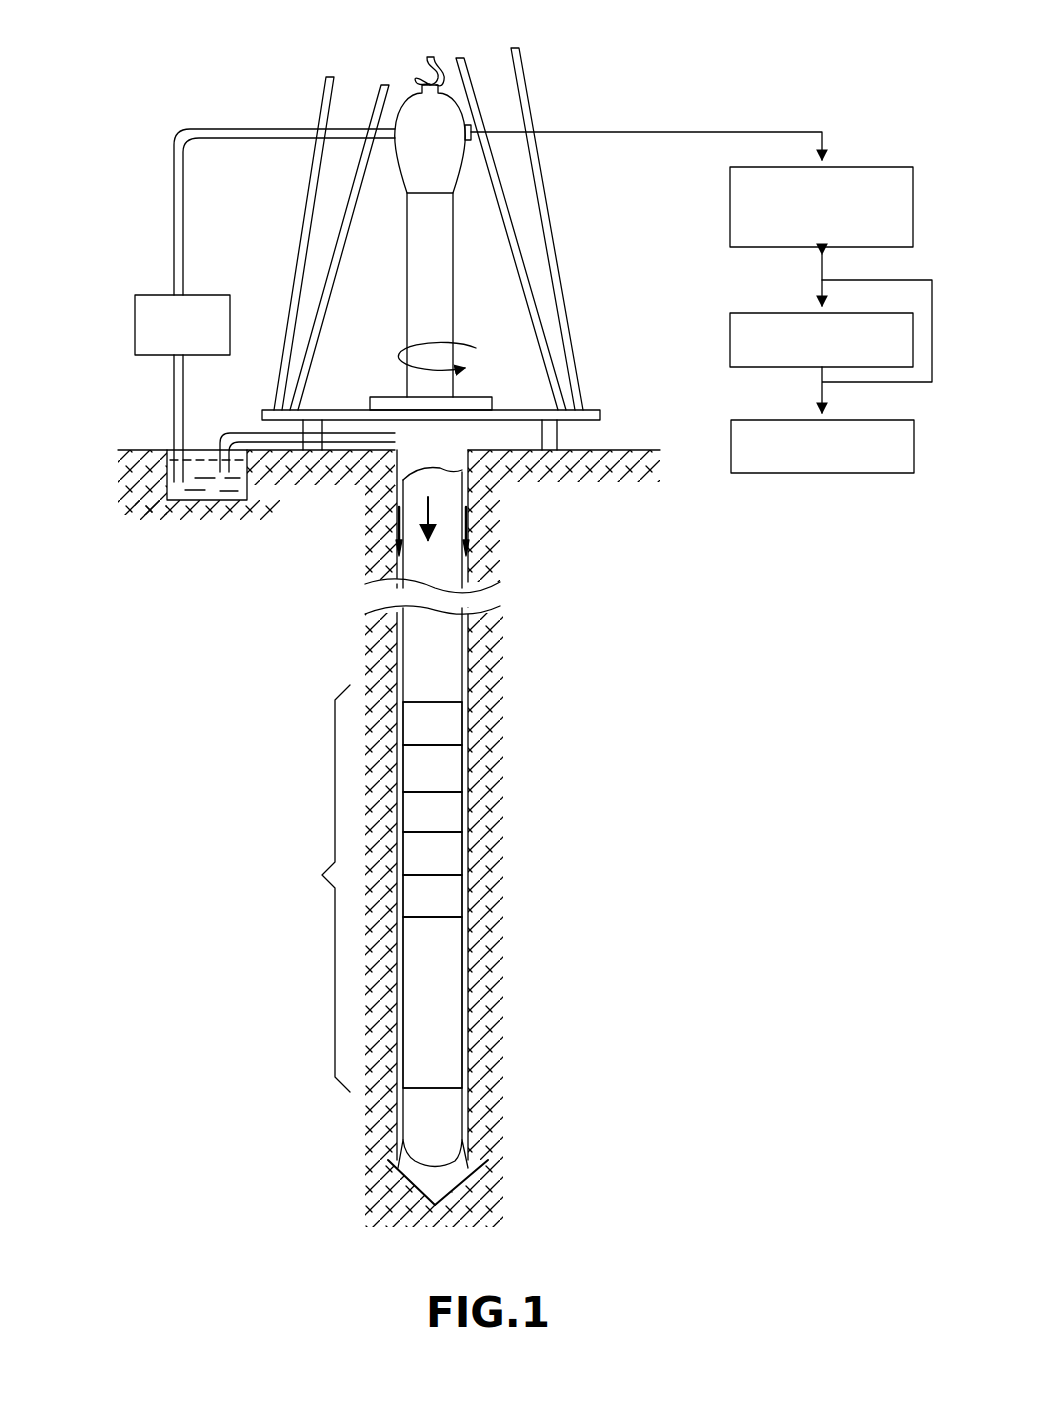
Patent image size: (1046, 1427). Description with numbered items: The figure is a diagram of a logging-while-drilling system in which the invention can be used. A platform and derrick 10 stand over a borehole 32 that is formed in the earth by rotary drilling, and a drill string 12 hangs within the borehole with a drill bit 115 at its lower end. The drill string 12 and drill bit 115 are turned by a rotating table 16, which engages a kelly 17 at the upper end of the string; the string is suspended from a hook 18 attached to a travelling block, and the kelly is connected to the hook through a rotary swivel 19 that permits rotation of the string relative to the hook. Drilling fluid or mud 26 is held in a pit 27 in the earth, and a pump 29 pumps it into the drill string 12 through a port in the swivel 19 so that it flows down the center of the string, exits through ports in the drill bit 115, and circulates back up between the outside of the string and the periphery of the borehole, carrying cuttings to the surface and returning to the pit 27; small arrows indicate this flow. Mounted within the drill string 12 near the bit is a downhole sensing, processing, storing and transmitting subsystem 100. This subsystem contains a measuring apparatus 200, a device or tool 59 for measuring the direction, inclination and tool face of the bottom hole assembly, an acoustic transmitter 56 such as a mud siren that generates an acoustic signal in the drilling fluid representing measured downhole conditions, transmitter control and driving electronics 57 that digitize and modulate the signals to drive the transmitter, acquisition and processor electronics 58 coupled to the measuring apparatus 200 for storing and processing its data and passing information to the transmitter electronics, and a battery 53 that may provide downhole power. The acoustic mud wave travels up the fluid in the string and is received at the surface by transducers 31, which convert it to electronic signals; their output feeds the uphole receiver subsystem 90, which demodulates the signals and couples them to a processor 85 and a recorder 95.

The platform and derrick 10 is at (650, 426).
The drill string 12 is at (400, 548).
The rotating table 16 is at (483, 396).
The kelly 17 is at (455, 315).
The hook 18 is at (422, 68).
The rotary swivel 19 is at (395, 175).
The drilling fluid or mud 26 is at (213, 492).
The pit 27 is at (167, 478).
The pump 29 is at (135, 330).
The transducers 31 is at (469, 146).
The borehole 32 is at (472, 650).
The battery 53 is at (455, 815).
The acoustic transmitter 56 is at (455, 718).
The transmitter control and driving electronics 57 is at (455, 778).
The acquisition and processor electronics 58 is at (455, 905).
The device or tool for measuring direction and inclination 59 is at (455, 858).
The processor 85 is at (730, 332).
The uphole receiver subsystem 90 is at (730, 200).
The recorder 95 is at (812, 475).
The downhole sensing, processing, storing and transmitting subsystem 100 is at (358, 804).
The drill bit 115 is at (470, 1155).
The measuring apparatus 200 is at (437, 980).